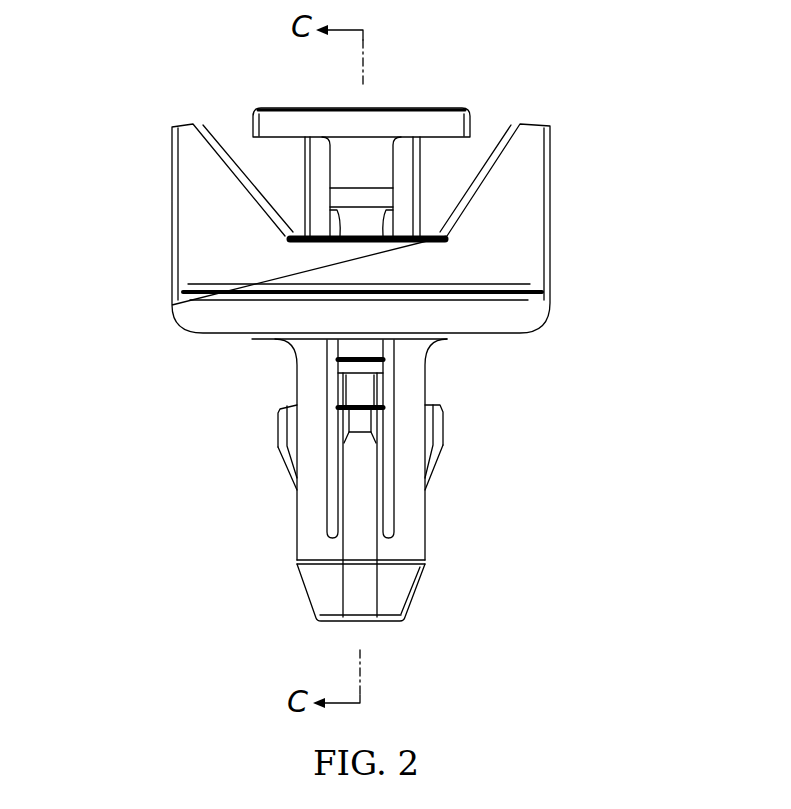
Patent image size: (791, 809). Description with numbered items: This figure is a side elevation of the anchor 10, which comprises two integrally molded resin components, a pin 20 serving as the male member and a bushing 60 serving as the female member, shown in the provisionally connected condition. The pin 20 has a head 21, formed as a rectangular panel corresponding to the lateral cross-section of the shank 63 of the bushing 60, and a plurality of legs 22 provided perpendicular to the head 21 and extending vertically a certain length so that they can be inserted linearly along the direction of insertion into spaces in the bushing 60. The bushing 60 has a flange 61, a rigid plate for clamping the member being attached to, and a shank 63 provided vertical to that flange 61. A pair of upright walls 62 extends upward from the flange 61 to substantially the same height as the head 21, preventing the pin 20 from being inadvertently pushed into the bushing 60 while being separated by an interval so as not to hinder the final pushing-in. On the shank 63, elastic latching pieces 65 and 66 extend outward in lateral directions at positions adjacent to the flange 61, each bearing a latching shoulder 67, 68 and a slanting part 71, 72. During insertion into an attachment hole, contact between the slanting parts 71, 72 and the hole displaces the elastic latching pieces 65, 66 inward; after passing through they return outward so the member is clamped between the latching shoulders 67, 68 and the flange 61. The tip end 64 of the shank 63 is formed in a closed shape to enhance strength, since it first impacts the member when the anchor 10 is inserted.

The anchor 10 is at (150, 91).
The pin 20 is at (395, 106).
The head 21 is at (427, 113).
The legs 22 is at (412, 180).
The bushing 60 is at (563, 217).
The flange 61 is at (523, 308).
The upright walls 62 is at (183, 163).
The shank 63 is at (308, 517).
The tip end 64 is at (313, 590).
The elastic latching piece 65 is at (280, 433).
The elastic latching piece 66 is at (362, 418).
The latching shoulder 67 is at (360, 403).
The latching shoulder 68 is at (295, 407).
The slanting part 71 is at (293, 470).
The slanting part 72 is at (367, 463).